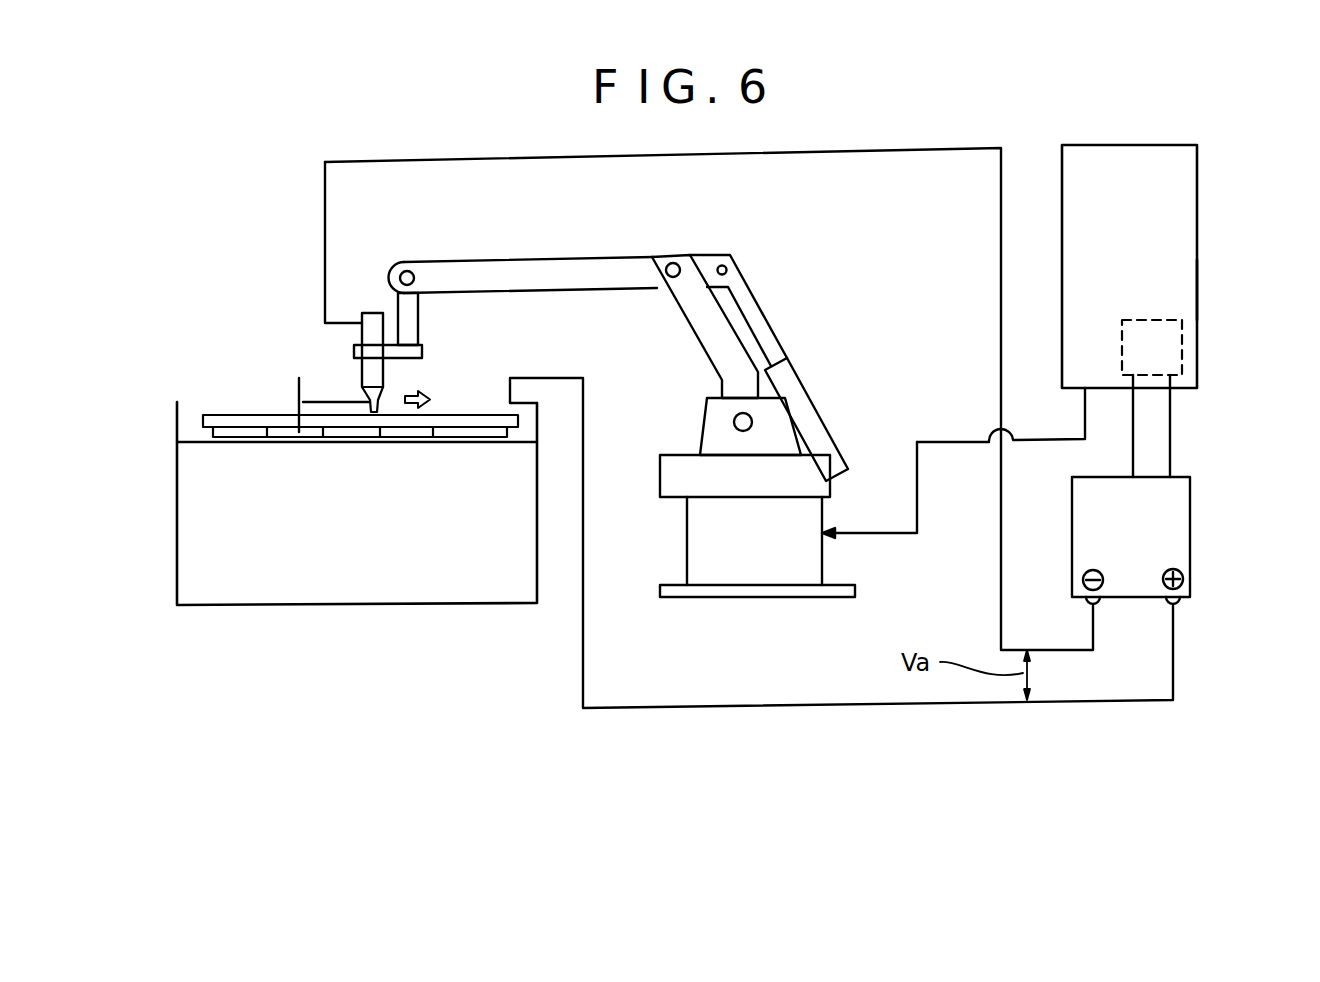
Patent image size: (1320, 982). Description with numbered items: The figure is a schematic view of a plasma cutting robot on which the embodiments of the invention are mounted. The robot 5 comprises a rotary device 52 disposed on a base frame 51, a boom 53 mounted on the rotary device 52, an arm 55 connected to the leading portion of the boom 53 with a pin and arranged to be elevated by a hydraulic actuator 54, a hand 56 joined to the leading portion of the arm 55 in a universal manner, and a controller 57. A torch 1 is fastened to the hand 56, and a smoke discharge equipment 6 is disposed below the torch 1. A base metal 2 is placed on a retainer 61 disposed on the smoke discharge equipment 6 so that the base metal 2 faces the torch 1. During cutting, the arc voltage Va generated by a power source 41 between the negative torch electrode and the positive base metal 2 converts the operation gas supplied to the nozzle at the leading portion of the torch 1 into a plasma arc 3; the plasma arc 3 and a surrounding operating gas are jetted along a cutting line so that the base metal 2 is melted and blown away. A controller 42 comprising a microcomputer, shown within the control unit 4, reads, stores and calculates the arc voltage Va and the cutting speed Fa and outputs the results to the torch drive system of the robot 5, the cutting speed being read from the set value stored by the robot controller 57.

The torch 1 is at (353, 368).
The base metal 2 is at (228, 415).
The plasma arc 3 is at (383, 400).
The control unit 4 is at (1173, 213).
The robot 5 is at (753, 288).
The smoke discharge equipment 6 is at (472, 588).
The power source 41 is at (1178, 527).
The controller 42 is at (1182, 360).
The base frame 51 is at (805, 563).
The rotary device 52 is at (680, 472).
The boom 53 is at (698, 320).
The hydraulic actuator 54 is at (797, 393).
The arm 55 is at (558, 263).
The hand 56 is at (421, 318).
The controller 57 is at (1177, 297).
The retainer 61 is at (513, 428).